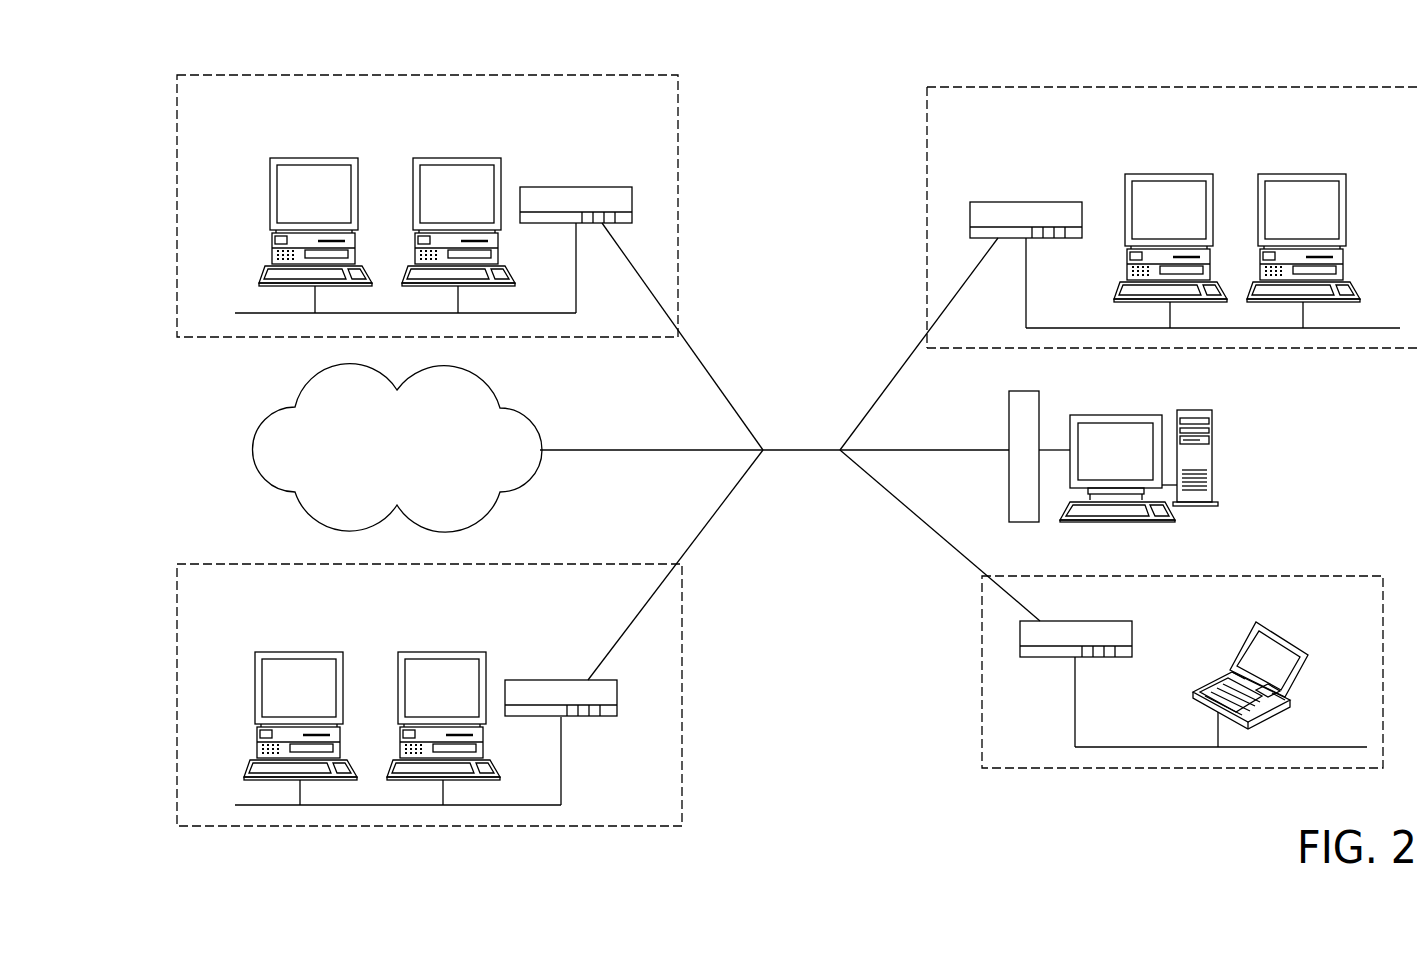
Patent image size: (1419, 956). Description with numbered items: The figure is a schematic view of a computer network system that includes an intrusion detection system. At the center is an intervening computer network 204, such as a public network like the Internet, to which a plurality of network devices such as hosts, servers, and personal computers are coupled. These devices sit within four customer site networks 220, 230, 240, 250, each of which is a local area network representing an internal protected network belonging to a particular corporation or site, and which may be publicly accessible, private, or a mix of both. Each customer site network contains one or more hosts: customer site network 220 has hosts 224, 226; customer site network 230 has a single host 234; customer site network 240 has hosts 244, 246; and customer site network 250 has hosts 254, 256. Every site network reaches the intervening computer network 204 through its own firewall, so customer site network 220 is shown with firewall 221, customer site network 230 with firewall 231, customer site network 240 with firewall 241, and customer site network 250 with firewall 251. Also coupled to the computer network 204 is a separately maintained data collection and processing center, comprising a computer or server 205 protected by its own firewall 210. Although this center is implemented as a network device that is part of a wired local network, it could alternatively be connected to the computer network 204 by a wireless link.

The computer network 204 is at (297, 400).
The server 205 is at (1212, 455).
The firewall 210 is at (1009, 420).
The customer site network 220 is at (1300, 87).
The firewall 221 is at (1048, 202).
The host 224 is at (1188, 174).
The host 226 is at (1313, 174).
The customer site network 230 is at (1198, 768).
The firewall 231 is at (1048, 657).
The host 234 is at (1283, 640).
The customer site network 240 is at (433, 826).
The firewall 241 is at (562, 680).
The host 244 is at (300, 652).
The host 246 is at (455, 652).
The customer site network 250 is at (382, 75).
The firewall 251 is at (560, 187).
The host 254 is at (322, 158).
The host 256 is at (465, 158).